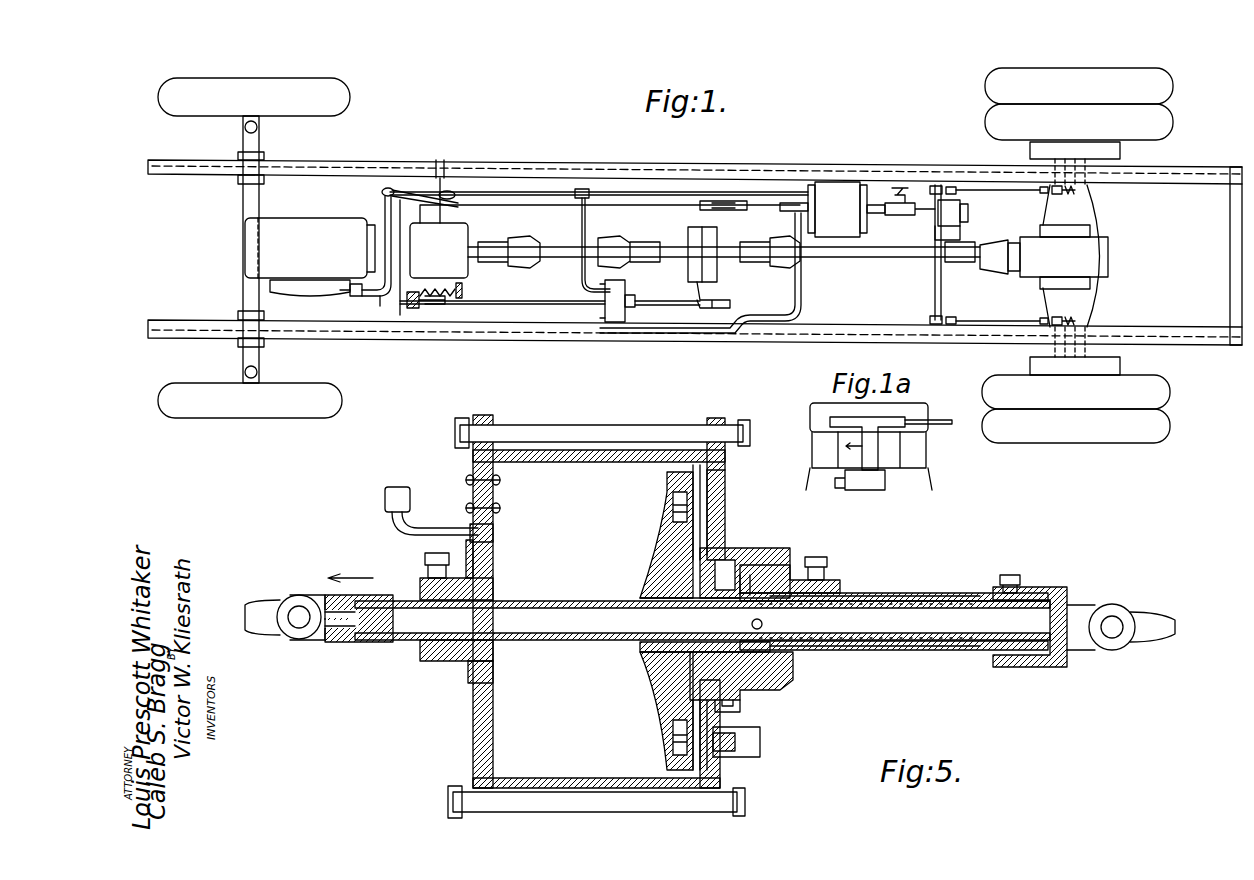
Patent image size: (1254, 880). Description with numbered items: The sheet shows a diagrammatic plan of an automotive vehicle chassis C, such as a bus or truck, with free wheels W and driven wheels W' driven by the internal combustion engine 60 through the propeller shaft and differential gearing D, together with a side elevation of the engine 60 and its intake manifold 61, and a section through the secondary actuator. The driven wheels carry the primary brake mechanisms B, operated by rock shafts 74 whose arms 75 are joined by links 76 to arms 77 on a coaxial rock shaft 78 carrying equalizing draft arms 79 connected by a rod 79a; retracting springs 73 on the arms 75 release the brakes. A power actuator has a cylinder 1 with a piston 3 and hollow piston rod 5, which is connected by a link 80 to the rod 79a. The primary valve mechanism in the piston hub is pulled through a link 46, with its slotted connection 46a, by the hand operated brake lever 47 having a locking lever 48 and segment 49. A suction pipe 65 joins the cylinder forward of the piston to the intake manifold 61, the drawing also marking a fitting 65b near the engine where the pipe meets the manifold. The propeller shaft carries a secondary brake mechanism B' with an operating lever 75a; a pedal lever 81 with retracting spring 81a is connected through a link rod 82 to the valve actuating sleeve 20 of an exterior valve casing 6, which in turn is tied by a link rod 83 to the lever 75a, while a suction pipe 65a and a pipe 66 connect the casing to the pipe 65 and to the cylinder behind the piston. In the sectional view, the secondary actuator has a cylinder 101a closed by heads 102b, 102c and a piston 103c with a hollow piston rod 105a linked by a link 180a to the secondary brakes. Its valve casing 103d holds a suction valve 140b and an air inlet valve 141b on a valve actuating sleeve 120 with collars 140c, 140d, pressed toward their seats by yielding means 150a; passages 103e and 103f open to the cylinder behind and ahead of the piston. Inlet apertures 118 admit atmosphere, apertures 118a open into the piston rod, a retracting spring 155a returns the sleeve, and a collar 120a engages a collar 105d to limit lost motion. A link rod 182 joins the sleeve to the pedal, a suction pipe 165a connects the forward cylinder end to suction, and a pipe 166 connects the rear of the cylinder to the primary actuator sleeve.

In FIG. 1, the power actuator cylinder 1 is at (832, 182).
In FIG. 1, the hollow piston rod 5 is at (882, 255).
In FIG. 1, the valve casing 6 is at (618, 286).
In FIG. 1, the valve actuating sleeve 20 is at (580, 298).
In FIG. 1, the link 46 is at (545, 206).
In FIG. 1, the slotted connection 46a is at (722, 200).
In FIG. 1, the hand operated brake lever 47 is at (403, 190).
In FIG. 1, the locking lever 48 is at (388, 188).
In FIG. 1, the segment 49 is at (452, 192).
In FIG. 1, the internal combustion engine 60 is at (310, 248).
In FIG. 1A, the internal combustion engine 60 is at (810, 410).
In FIG. 1, the intake manifold 61 is at (290, 290).
In FIG. 1, the suction pipe 65 is at (558, 190).
In FIG. 1A, the suction pipe 65 is at (942, 418).
In FIG. 1, the suction pipe 65a is at (588, 236).
In FIG. 1, the pipe fitting 65b is at (354, 296).
In FIG. 1, the pipe 66 is at (792, 322).
In FIG. 1, the retracting springs 73 is at (1090, 192).
In FIG. 1, the rock shafts 74 is at (1090, 162).
In FIG. 1, the arms 75 is at (1052, 186).
In FIG. 1, the operating lever 75a is at (712, 300).
In FIG. 1, the links 76 is at (1020, 192).
In FIG. 1, the arms 77 is at (948, 186).
In FIG. 1, the coaxial rock shaft 78 is at (933, 299).
In FIG. 1, the equalizing draft arms 79 is at (948, 232).
In FIG. 1, the rod 79a is at (960, 210).
In FIG. 1, the link 80 is at (920, 205).
In FIG. 1, the pedal lever 81 is at (413, 308).
In FIG. 1, the retracting spring 81a is at (462, 290).
In FIG. 1, the link rod 82 is at (552, 306).
In FIG. 1, the link rod 83 is at (665, 306).
In FIG. 5, the cylinder 101a is at (610, 450).
In FIG. 5, the head 102b is at (472, 486).
In FIG. 5, the head 102c is at (727, 470).
In FIG. 5, the piston 103c is at (665, 540).
In FIG. 5, the valve casing 103d is at (760, 560).
In FIG. 5, the passage 103e is at (708, 540).
In FIG. 5, the passage 103f is at (640, 598).
In FIG. 5, the hollow piston rod 105a is at (897, 592).
In FIG. 5, the collar 105d is at (1015, 580).
In FIG. 5, the inlet apertures 118 is at (340, 642).
In FIG. 5, the apertures 118a is at (763, 624).
In FIG. 5, the valve actuating sleeve 120 is at (405, 662).
In FIG. 5, the collar 120a is at (1060, 668).
In FIG. 5, the suction valve 140b is at (690, 660).
In FIG. 5, the collar 140c is at (640, 648).
In FIG. 5, the collar 140d is at (820, 556).
In FIG. 5, the air inlet valve 141b is at (735, 700).
In FIG. 5, the yielding means 150a is at (665, 700).
In FIG. 5, the retracting spring 155a is at (965, 652).
In FIG. 5, the suction pipe 165a is at (385, 500).
In FIG. 5, the pipe 166 is at (790, 762).
In FIG. 5, the link 180a is at (1176, 627).
In FIG. 5, the link rod 182 is at (262, 632).
In FIG. 5, the piston 3 is at (357, 576).
In FIG. 1, the primary brake mechanisms B is at (1042, 258).
In FIG. 1, the secondary brake mechanism B' is at (715, 249).
In FIG. 1, the chassis C is at (805, 326).
In FIG. 1, the differential gearing D is at (1108, 254).
In FIG. 1, the free wheels W is at (269, 245).
In FIG. 1, the driven wheels W' is at (1100, 255).